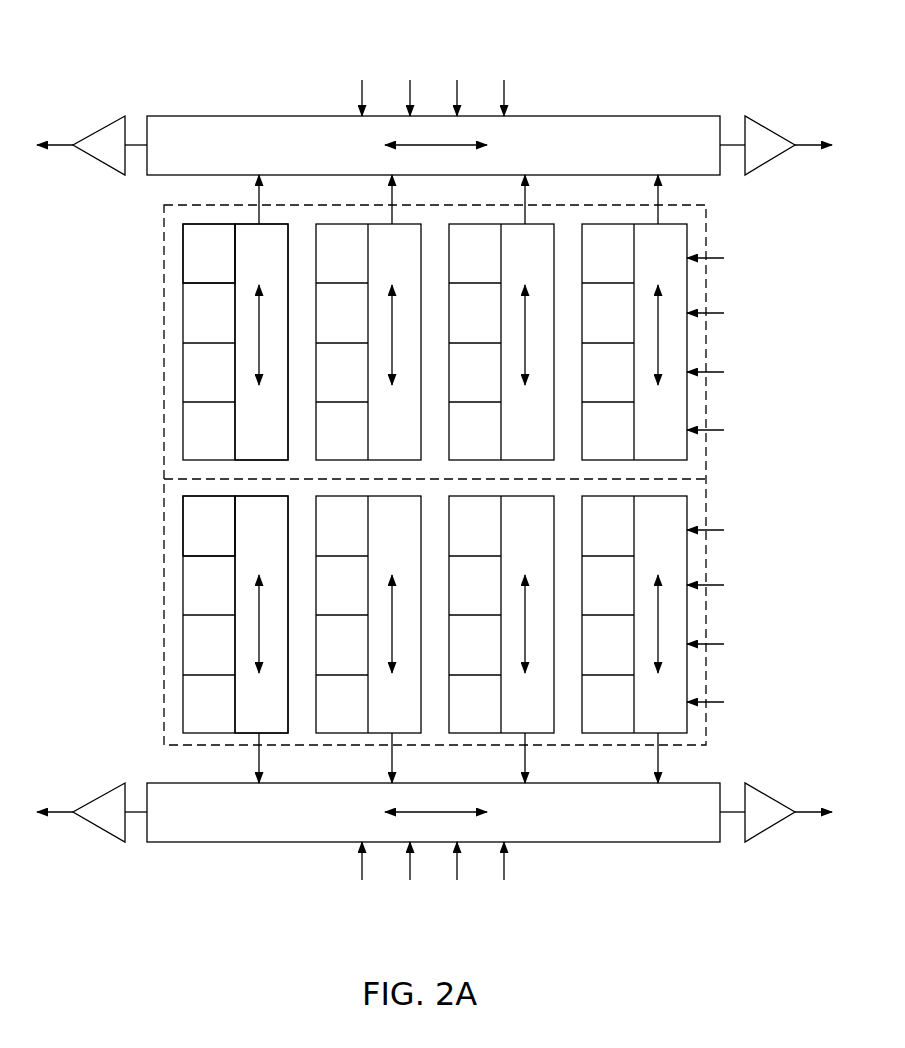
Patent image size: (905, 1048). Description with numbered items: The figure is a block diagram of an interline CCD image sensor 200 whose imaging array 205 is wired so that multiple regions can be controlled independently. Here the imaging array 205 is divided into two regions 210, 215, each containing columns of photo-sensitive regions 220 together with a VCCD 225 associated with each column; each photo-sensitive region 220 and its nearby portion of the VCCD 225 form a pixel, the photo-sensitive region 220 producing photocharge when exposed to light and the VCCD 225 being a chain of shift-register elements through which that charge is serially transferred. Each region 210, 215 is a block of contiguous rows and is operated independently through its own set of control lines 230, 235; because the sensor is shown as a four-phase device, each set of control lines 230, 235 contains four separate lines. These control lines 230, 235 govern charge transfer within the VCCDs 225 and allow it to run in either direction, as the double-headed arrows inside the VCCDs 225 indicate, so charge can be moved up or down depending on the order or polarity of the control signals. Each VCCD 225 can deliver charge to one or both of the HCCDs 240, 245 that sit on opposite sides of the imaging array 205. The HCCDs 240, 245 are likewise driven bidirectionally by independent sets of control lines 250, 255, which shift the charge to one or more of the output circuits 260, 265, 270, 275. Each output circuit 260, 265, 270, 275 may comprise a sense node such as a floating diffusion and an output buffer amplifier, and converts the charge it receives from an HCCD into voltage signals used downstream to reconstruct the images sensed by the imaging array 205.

The interline CCD image sensor 200 is at (205, 40).
The imaging array 205 is at (115, 470).
The first region of imaging array 210 is at (164, 232).
The second region of imaging array 215 is at (164, 530).
The photo-sensitive region 220 is at (198, 257).
The VCCD 225 is at (248, 428).
The control lines for first region 230 is at (770, 240).
The control lines for second region 235 is at (770, 512).
The first HCCD 240 is at (646, 116).
The second HCCD 245 is at (647, 842).
The control lines for first HCCD 250 is at (528, 46).
The control lines for second HCCD 255 is at (528, 911).
The output circuit 260 is at (105, 128).
The output circuit 265 is at (772, 128).
The output circuit 270 is at (99, 830).
The output circuit 275 is at (771, 830).